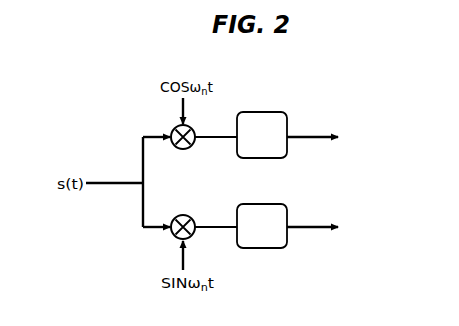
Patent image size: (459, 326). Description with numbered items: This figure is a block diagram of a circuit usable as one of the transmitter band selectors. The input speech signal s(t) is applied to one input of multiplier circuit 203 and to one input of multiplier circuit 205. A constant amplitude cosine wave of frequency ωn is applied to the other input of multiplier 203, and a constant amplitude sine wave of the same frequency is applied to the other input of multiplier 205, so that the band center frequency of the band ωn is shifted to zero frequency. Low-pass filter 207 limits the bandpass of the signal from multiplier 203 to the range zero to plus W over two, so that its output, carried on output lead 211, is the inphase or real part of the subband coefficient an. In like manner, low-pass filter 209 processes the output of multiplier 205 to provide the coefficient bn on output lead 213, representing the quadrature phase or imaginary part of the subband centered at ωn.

The multiplier circuit 203 is at (187, 149).
The multiplier circuit 205 is at (185, 215).
The low-pass filter 207 is at (265, 112).
The low-pass filter 209 is at (260, 248).
The output a_n (in-phase coefficient) 211 is at (308, 140).
The output b_n (quadrature coefficient) 213 is at (314, 230).